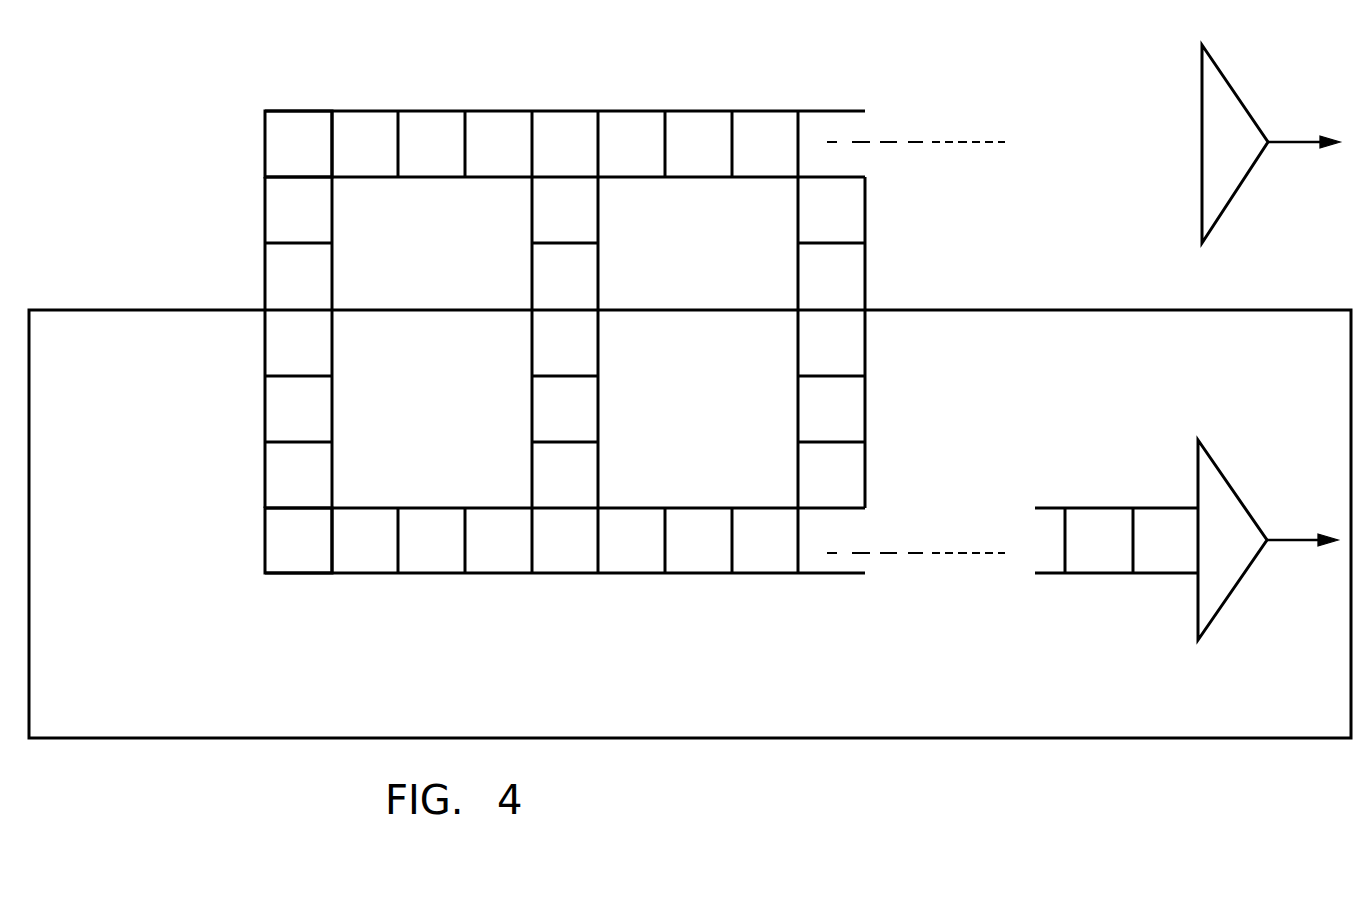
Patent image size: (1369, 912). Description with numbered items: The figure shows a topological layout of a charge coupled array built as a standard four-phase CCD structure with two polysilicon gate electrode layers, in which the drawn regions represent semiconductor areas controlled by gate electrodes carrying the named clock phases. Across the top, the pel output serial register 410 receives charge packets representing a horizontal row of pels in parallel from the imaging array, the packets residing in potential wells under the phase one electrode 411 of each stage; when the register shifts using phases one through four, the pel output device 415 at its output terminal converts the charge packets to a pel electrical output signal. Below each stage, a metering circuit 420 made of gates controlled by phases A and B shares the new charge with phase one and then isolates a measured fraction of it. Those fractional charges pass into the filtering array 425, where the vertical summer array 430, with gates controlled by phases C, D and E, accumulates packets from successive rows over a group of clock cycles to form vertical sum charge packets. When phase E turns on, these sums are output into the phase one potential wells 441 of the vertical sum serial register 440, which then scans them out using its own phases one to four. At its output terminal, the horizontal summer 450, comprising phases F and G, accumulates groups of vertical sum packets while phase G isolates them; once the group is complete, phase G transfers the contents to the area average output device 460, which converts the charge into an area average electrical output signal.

The pel output serial register 410 is at (352, 98).
The phase 1 electrode 411 is at (263, 150).
The pel output device 415 is at (1240, 93).
The metering circuit 420 is at (253, 311).
The filtering array 425 is at (690, 524).
The vertical summer array 430 is at (250, 508).
The vertical sum serial register 440 is at (322, 622).
The phase 1 potential wells 441 is at (264, 545).
The horizontal summer 450 is at (1195, 502).
The area average output device 460 is at (1240, 493).